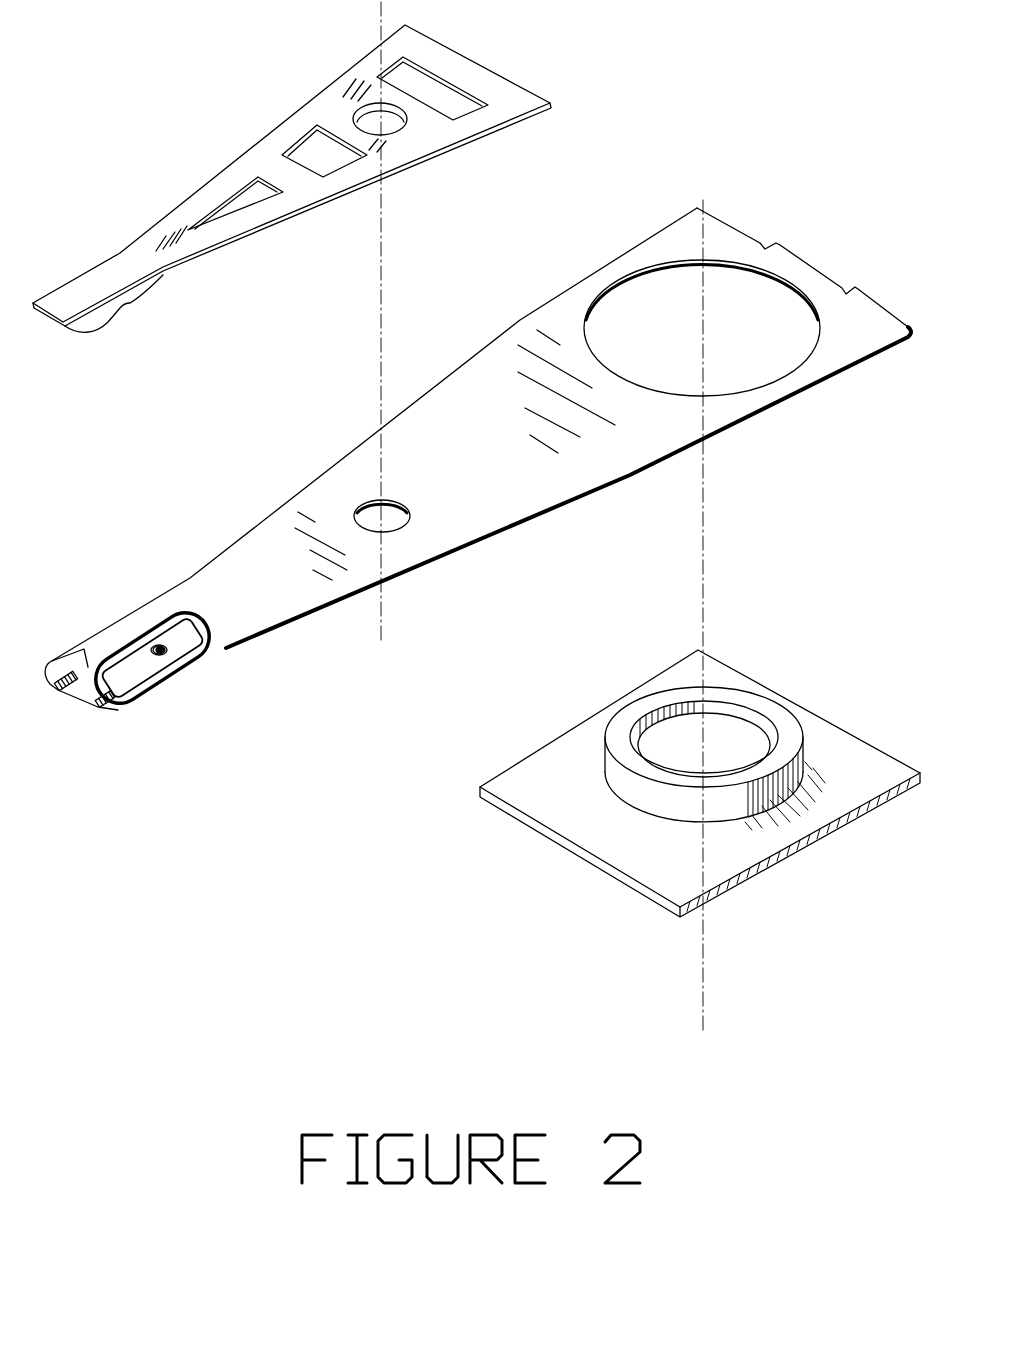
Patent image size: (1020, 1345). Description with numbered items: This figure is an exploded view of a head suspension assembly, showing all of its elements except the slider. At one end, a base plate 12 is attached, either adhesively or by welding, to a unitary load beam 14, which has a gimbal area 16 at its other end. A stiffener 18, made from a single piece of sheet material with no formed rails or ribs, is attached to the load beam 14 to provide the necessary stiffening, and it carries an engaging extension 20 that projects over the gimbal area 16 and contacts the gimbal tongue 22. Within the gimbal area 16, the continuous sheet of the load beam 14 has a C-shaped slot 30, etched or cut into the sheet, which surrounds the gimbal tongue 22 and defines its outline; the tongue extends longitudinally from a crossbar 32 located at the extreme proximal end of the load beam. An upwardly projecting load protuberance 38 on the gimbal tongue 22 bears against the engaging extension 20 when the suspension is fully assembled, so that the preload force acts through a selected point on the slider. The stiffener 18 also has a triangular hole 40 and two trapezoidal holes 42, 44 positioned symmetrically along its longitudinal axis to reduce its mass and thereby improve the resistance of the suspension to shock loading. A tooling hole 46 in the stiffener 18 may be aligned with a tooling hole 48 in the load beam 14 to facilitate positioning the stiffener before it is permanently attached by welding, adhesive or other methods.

The base plate 12 is at (696, 876).
The load beam 14 is at (461, 473).
The gimbal area 16 is at (43, 660).
The stiffener 18 is at (328, 108).
The engaging extension 20 is at (122, 308).
The gimbal tongue 22 is at (141, 661).
The C-shaped slot 30 is at (215, 622).
The crossbar 32 is at (83, 692).
The load protuberance 38 is at (168, 652).
The triangular hole 40 is at (250, 197).
The trapezoidal hole 42 is at (325, 157).
The trapezoidal hole 44 is at (450, 102).
The tooling hole 46 is at (385, 123).
The tooling hole 48 is at (400, 525).